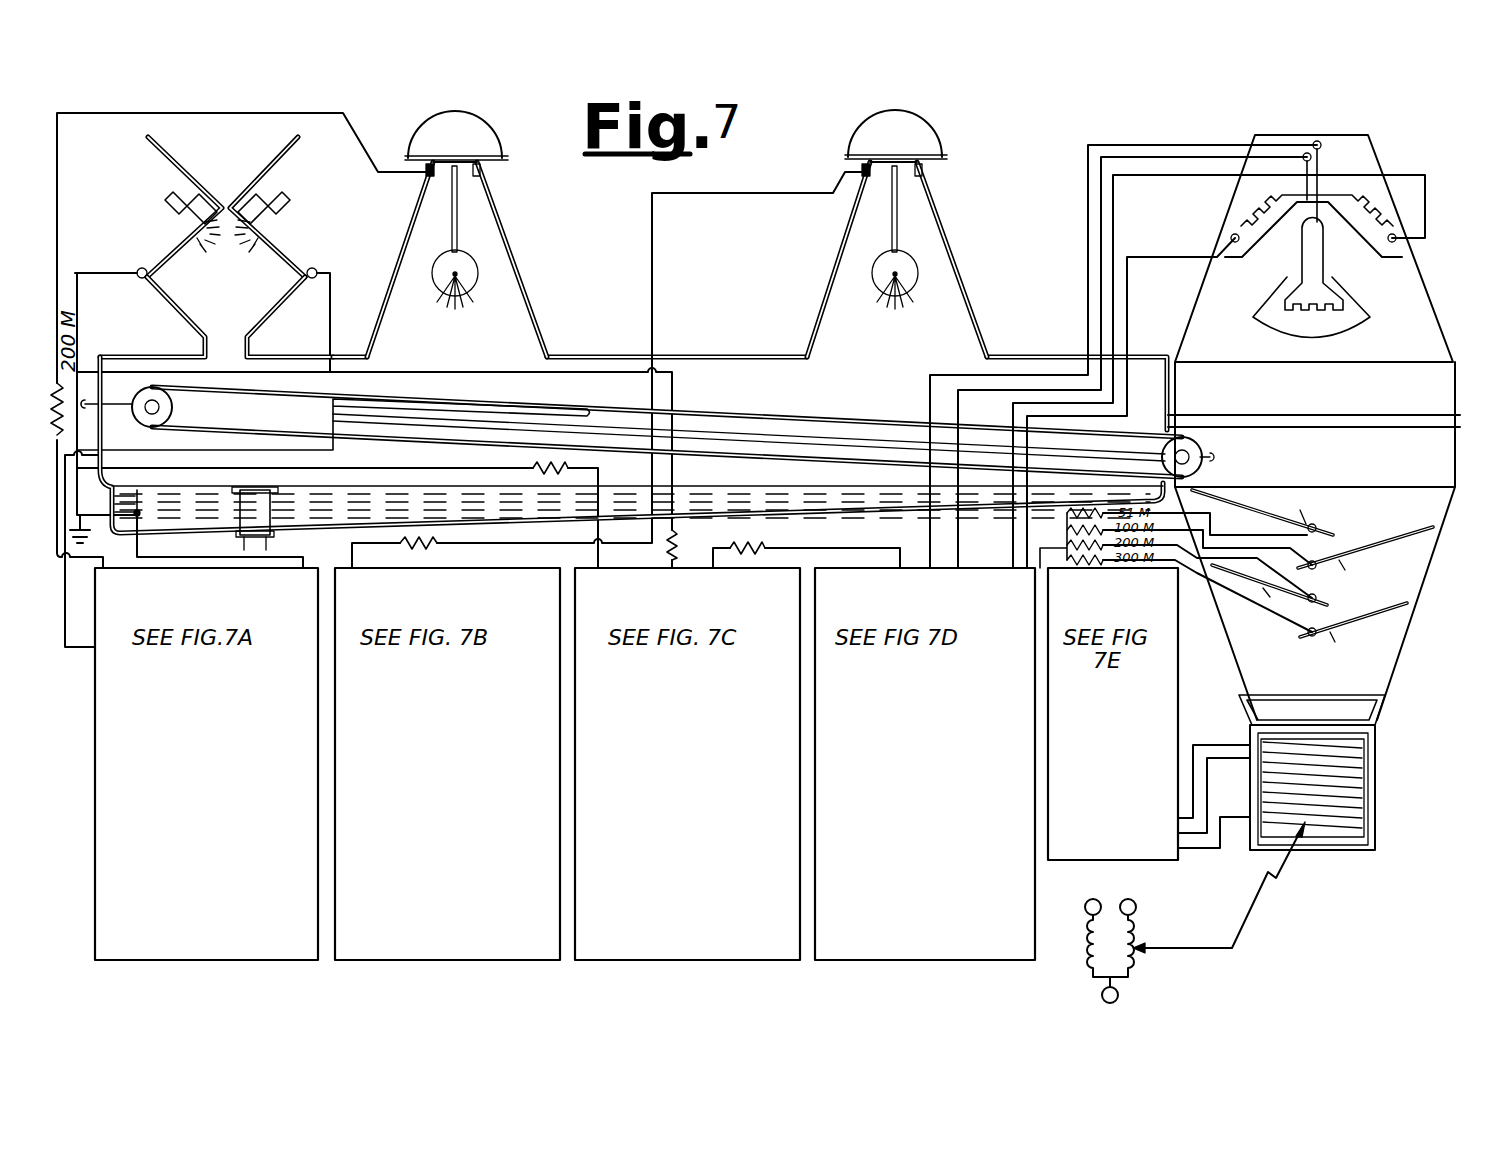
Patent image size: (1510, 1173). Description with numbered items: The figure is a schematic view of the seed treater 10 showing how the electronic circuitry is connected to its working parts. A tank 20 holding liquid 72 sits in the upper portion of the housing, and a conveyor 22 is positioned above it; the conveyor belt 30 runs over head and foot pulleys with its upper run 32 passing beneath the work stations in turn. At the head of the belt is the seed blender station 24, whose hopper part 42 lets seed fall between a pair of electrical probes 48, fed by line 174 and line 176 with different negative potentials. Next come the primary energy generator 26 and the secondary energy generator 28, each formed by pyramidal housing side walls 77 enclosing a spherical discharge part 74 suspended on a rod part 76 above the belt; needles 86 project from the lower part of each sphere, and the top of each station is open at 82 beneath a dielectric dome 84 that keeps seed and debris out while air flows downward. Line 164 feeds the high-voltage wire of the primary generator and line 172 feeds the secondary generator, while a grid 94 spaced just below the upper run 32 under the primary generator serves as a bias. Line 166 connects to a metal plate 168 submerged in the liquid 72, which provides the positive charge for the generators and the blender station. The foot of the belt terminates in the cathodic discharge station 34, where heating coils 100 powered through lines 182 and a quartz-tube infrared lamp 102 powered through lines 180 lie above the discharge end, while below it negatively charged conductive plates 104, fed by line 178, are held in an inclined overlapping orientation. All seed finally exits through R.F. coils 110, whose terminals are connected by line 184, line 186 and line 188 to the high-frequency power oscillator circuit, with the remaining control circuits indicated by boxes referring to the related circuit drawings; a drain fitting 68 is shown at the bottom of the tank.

The seed treater 10 is at (997, 196).
The tank 20 is at (870, 518).
The conveyor 22 is at (731, 398).
The seed blender station 24 is at (298, 179).
The primary energy generator 26 is at (527, 240).
The secondary energy generator 28 is at (798, 269).
The conveyor belt 30 is at (700, 460).
The upper run 32 is at (792, 400).
The cathodic discharge station 34 is at (1302, 427).
The hopper part 42 is at (176, 182).
The electrical probes 48 is at (206, 258).
The drain 68 is at (276, 542).
The liquid 72 is at (622, 496).
The spherical discharge part 74 is at (478, 290).
The rod part 76 is at (450, 226).
The pyramidal housing side walls 77 is at (398, 255).
The upper opening 82 is at (492, 174).
The dielectric dome 84 is at (485, 130).
The needles 86 is at (443, 296).
The grid 94 is at (530, 402).
The heating coils 100 is at (1242, 226).
The quartz-tube infrared lamp 102 is at (1282, 280).
The conductive plates 104 is at (1368, 524).
The coils 110 is at (1356, 774).
The line 164 is at (228, 113).
The line 166 is at (187, 556).
The metal plate 168 is at (178, 482).
The line 172 is at (655, 248).
The line 174 is at (98, 272).
The line 176 is at (322, 310).
The line 178 is at (856, 550).
The lines 180 is at (1086, 205).
The lines 182 is at (1148, 312).
The line 184 is at (1222, 743).
The line 186 is at (1224, 768).
The line 188 is at (1209, 860).